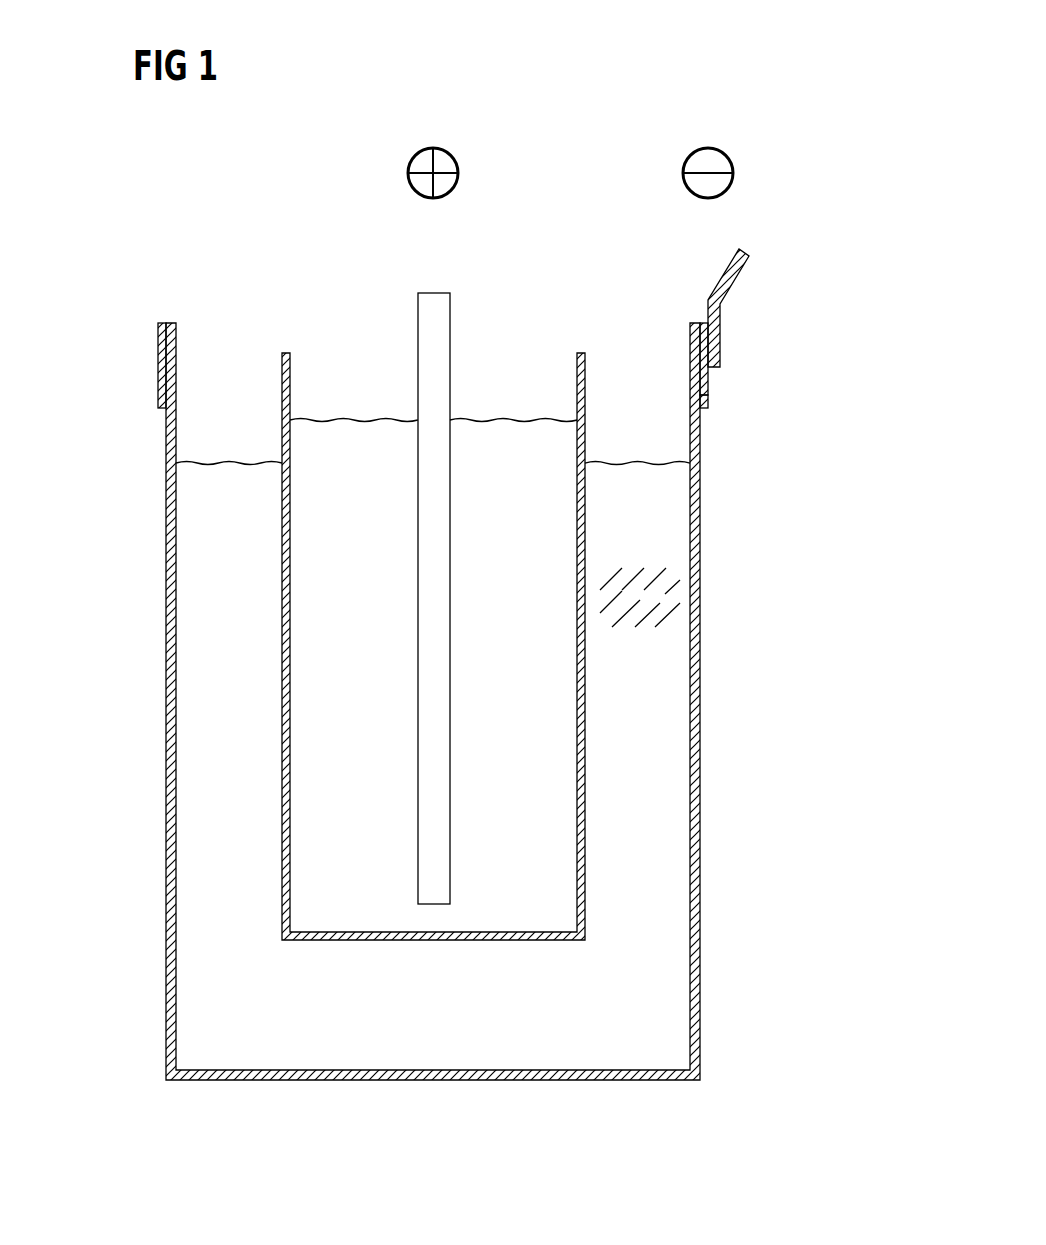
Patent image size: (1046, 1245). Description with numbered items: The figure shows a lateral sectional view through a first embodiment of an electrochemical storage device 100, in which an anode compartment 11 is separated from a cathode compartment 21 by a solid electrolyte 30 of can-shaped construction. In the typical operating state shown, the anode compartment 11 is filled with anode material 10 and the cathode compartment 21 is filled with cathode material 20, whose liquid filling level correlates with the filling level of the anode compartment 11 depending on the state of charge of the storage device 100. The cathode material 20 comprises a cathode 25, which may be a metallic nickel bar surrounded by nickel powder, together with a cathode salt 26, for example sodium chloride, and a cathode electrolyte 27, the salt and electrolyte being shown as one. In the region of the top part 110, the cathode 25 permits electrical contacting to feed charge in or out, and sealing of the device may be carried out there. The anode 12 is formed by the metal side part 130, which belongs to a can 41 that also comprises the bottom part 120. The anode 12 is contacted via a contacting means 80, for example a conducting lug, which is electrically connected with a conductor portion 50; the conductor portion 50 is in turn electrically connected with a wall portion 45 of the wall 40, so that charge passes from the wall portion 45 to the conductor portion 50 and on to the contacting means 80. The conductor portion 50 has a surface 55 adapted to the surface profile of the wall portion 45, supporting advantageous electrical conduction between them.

The electrochemical storage device 100 is at (774, 240).
The anode material 10 is at (645, 602).
The anode compartment 11 is at (651, 775).
The anode 12 is at (710, 126).
The cathode material 20 is at (510, 433).
The cathode compartment 21 is at (527, 548).
The cathode 25 is at (432, 126).
The cathode salt 26 is at (340, 432).
The cathode electrolyte 27 is at (513, 420).
The solid electrolyte 30 is at (283, 560).
The wall 40 is at (678, 438).
The can 41 is at (700, 1045).
The wall portion 45 is at (694, 366).
The conductor portion 50 is at (707, 374).
The surface 55 is at (702, 396).
The contacting means 80 is at (735, 283).
The top part 110 is at (126, 379).
The bottom part 120 is at (126, 1046).
The side part 130 is at (166, 720).